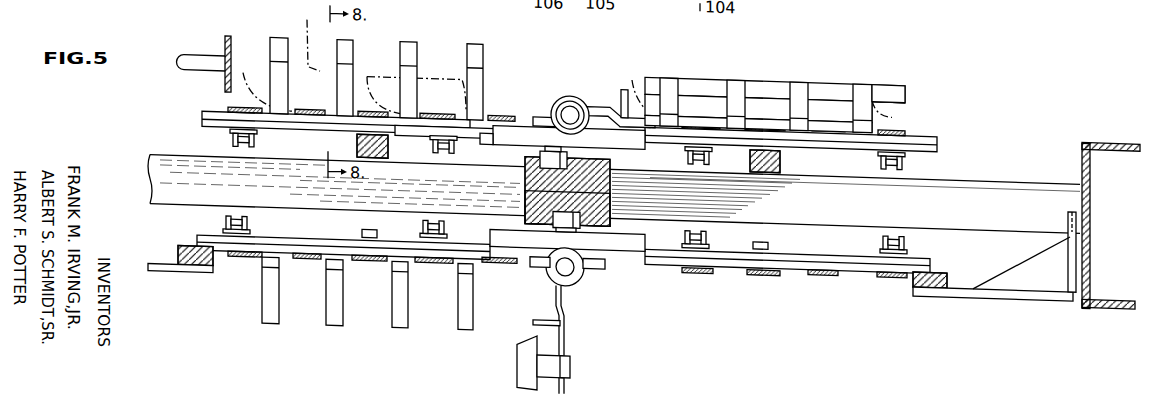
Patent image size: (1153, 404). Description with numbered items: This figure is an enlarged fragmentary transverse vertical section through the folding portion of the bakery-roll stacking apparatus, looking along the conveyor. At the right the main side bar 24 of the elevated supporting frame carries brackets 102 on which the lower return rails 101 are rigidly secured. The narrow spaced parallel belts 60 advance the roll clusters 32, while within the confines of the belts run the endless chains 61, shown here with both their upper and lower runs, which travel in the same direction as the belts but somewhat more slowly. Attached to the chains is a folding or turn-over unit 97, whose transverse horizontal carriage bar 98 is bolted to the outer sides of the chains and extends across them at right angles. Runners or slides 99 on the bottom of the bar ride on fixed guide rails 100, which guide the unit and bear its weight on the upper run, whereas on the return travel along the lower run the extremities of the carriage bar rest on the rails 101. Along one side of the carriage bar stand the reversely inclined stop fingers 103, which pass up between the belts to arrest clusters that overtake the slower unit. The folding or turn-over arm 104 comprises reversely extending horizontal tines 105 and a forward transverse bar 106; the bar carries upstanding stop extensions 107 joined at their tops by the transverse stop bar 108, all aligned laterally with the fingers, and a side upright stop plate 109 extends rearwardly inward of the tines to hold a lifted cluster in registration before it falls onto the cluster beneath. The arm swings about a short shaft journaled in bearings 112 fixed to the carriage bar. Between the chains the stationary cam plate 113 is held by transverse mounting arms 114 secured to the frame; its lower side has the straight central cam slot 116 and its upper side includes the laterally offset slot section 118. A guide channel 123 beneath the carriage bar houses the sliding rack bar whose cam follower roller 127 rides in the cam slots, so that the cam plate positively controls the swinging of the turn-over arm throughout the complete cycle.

The main side bar 24 is at (1080, 151).
The roll cluster 32 is at (643, 78).
The belt 60 is at (235, 84).
The endless chain 61 is at (230, 145).
The folding or turn-over unit 97 is at (805, 55).
The carriage bar 98 is at (928, 127).
The runner or slide 99 is at (373, 145).
The guide rail 100 is at (380, 167).
The rail 101 is at (194, 281).
The bracket 102 is at (158, 286).
The stop finger 103 is at (468, 50).
The folding or turn-over arm 104 is at (699, 105).
The tine 105 is at (775, 89).
The transverse bar 106 is at (806, 114).
The stop extension 107 is at (866, 108).
The stop bar 108 is at (908, 84).
The side upright stop plate 109 is at (622, 95).
The bearing 112 is at (555, 98).
The cam plate 113 is at (594, 205).
The mounting arm 114 is at (320, 212).
The lower cam slot 116 is at (560, 210).
The laterally offset longitudinal slot section 118 is at (542, 176).
The guide channel 123 is at (517, 138).
The cam follower roller 127 is at (563, 229).